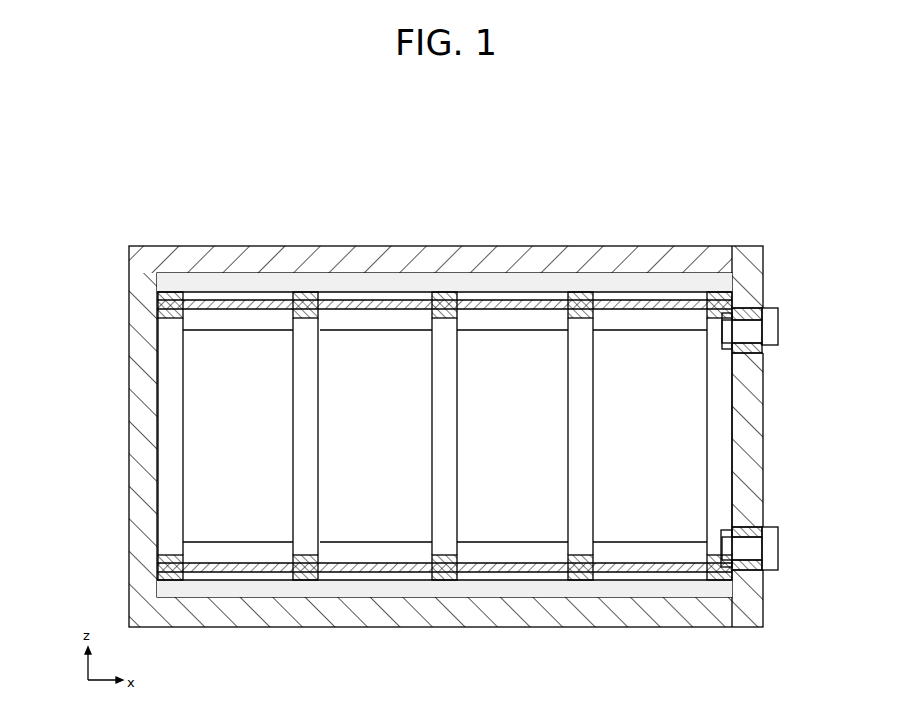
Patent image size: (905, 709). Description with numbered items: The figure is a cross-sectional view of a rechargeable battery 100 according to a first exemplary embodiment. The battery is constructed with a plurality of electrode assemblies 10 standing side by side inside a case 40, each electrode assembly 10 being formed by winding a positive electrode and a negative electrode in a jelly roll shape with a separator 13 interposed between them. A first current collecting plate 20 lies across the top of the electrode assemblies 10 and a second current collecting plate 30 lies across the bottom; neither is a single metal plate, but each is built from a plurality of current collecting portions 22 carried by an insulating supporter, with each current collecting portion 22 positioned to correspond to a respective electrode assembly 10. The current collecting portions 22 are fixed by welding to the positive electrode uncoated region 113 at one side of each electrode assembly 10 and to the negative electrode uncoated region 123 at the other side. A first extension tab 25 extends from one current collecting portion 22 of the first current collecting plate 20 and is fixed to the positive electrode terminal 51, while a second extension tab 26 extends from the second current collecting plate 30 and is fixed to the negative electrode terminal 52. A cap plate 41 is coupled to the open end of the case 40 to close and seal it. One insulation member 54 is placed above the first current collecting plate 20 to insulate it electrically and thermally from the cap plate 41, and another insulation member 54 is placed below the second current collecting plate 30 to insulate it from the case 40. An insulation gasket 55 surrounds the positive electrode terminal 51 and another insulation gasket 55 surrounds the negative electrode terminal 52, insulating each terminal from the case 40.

The rechargeable battery 100 is at (462, 165).
The electrode assembly 10 is at (447, 436).
The separator 13 is at (200, 448).
The first current collecting plate 20 is at (444, 245).
The current collecting portion 22 is at (497, 300).
The first extension tab 25 is at (732, 361).
The second extension tab 26 is at (733, 498).
The second current collecting plate 30 is at (372, 581).
The case 40 is at (582, 615).
The cap plate 41 is at (587, 292).
The positive electrode terminal 51 is at (779, 327).
The negative electrode terminal 52 is at (779, 546).
The insulation member 54 is at (698, 284).
The insulation gasket 55 is at (765, 299).
The positive electrode uncoated region 113 is at (243, 318).
The negative electrode uncoated region 123 is at (243, 552).